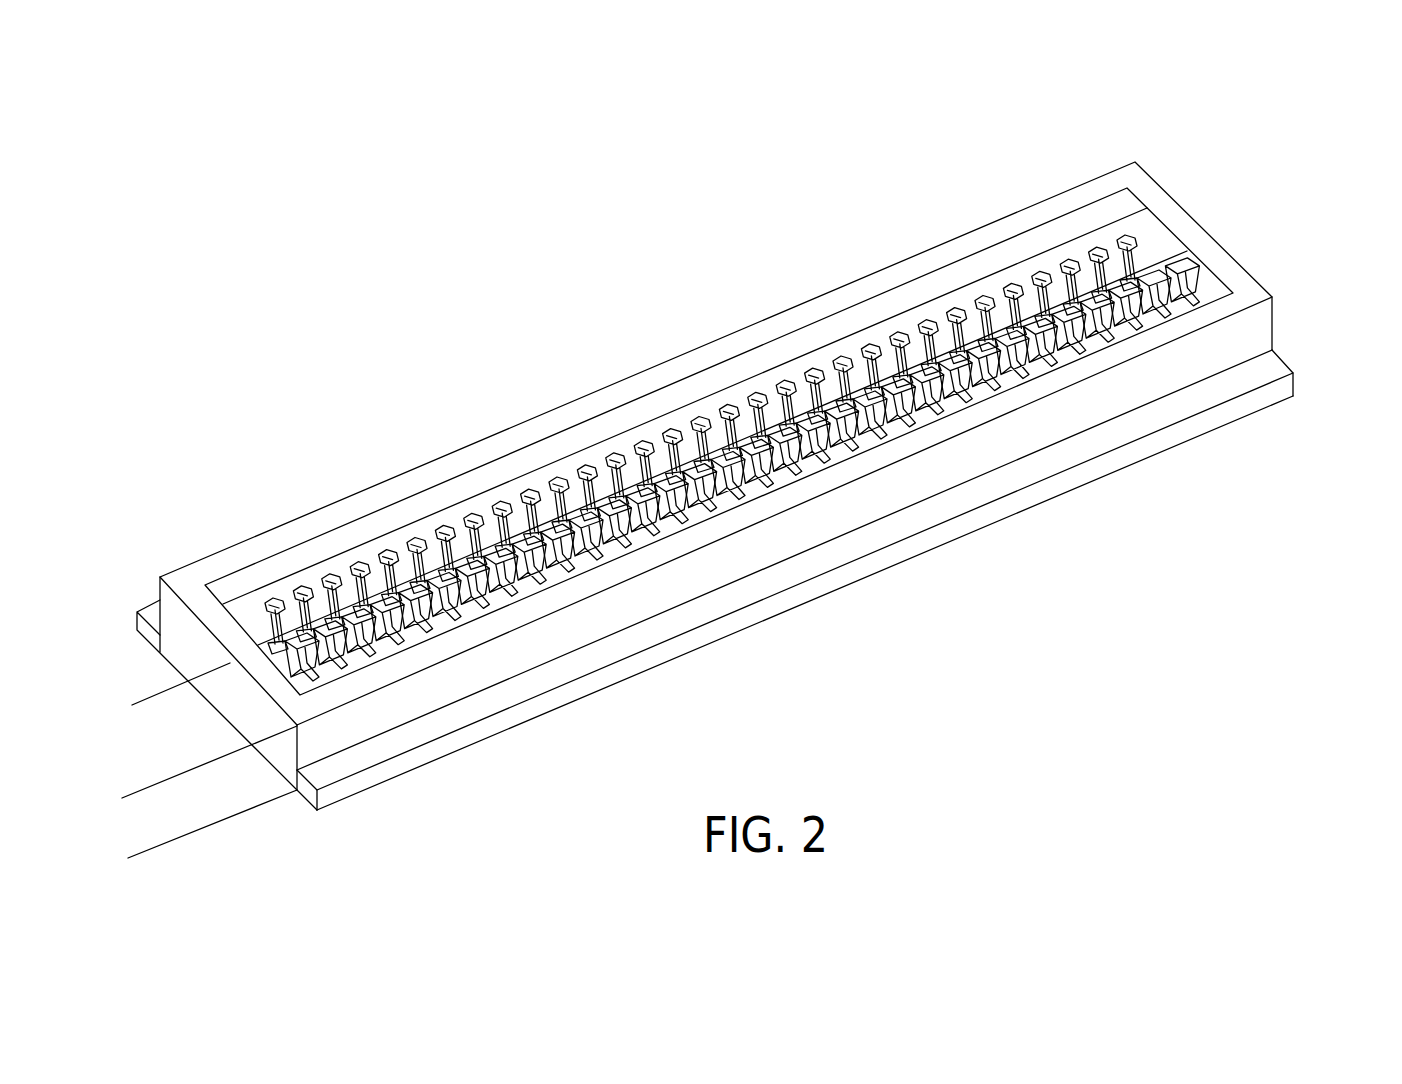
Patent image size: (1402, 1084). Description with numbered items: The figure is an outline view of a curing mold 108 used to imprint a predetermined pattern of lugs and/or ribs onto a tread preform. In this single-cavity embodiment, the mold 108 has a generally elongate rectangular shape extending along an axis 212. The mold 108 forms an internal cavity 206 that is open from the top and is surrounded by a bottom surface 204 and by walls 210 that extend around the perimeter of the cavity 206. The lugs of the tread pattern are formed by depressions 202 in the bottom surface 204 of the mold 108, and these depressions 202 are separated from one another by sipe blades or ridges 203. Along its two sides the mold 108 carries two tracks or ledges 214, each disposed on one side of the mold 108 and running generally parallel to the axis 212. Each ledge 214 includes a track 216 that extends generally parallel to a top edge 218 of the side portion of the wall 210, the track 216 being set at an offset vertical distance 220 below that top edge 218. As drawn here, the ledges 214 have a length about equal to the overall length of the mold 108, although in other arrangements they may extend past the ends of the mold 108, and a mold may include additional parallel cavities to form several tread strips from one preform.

The mold 108 is at (1252, 330).
The depressions 202 is at (1153, 258).
The sipe blades or ridges 203 is at (1118, 220).
The bottom surface 204 is at (1145, 270).
The internal cavity 206 is at (1045, 243).
The walls 210 is at (907, 277).
The axis 212 is at (153, 693).
The ledges 214 is at (145, 625).
The track 216 is at (813, 565).
The top edge 218 is at (1078, 382).
The offset vertical distance 220 is at (146, 740).